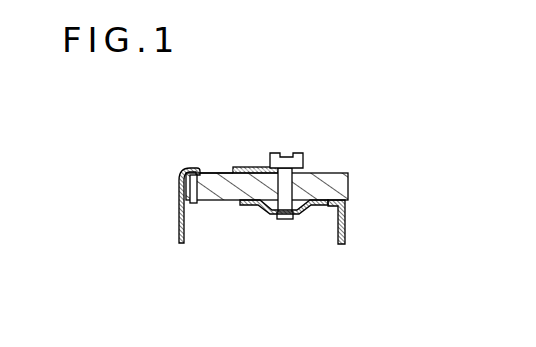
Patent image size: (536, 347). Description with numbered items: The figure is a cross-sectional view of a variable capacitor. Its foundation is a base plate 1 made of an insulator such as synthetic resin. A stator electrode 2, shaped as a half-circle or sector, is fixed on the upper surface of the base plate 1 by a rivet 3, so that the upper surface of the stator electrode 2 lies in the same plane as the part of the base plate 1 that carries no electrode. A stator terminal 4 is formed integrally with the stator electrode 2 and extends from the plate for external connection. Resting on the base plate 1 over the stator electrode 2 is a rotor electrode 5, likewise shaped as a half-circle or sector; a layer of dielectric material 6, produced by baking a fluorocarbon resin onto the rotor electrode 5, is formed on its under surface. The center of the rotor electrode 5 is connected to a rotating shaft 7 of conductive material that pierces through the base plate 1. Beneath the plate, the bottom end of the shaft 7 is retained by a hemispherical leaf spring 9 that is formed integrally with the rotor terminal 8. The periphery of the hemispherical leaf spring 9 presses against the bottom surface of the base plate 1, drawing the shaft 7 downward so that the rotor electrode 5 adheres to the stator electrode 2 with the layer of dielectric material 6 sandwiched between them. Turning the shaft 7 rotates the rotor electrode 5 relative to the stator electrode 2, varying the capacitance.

The base plate 1 is at (343, 190).
The stator electrode 2 is at (222, 172).
The rivet 3 is at (193, 205).
The stator terminal 4 is at (179, 215).
The rotor electrode 5 is at (250, 167).
The layer of dielectric material 6 is at (243, 167).
The rotating shaft 7 is at (303, 153).
The rotor terminal 8 is at (345, 228).
The hemispherical leaf spring 9 is at (260, 220).